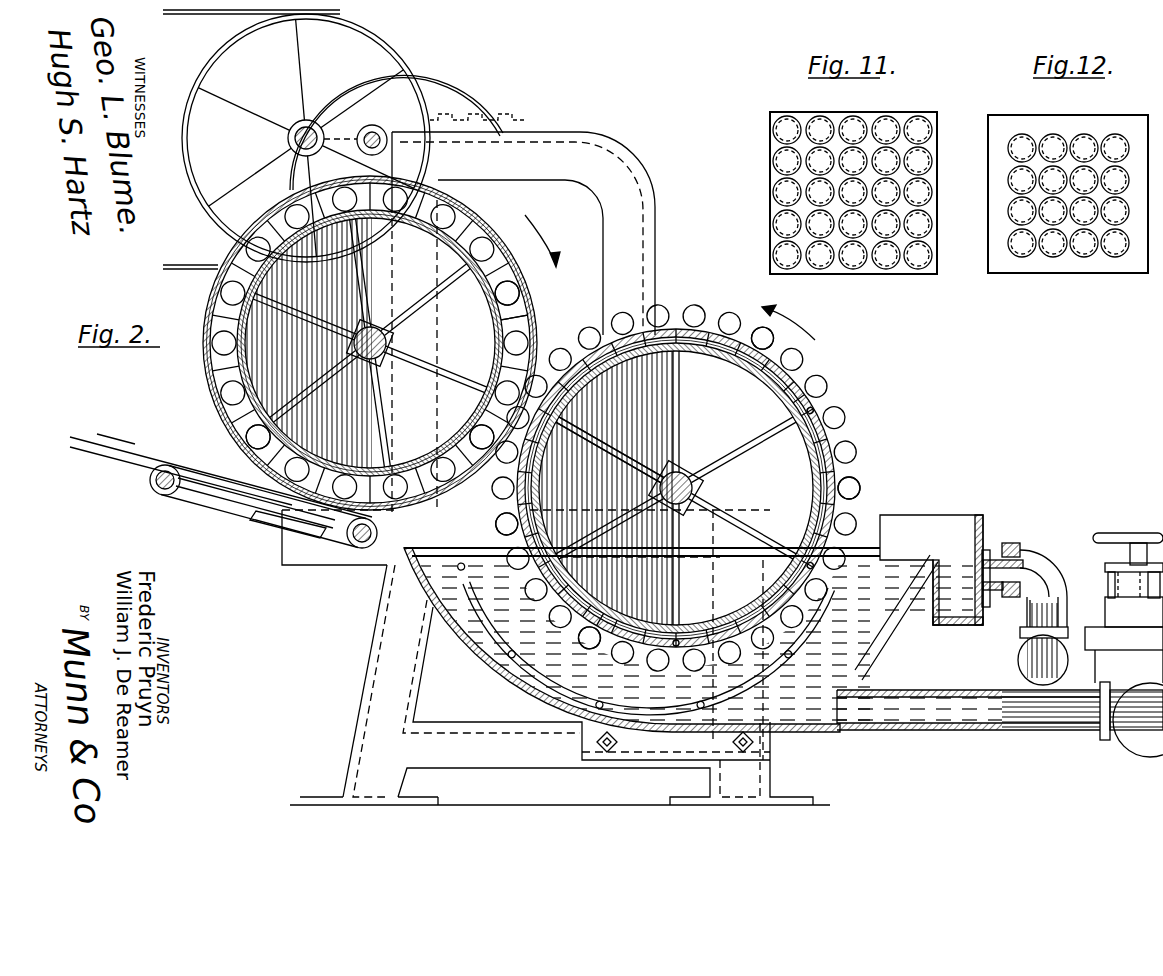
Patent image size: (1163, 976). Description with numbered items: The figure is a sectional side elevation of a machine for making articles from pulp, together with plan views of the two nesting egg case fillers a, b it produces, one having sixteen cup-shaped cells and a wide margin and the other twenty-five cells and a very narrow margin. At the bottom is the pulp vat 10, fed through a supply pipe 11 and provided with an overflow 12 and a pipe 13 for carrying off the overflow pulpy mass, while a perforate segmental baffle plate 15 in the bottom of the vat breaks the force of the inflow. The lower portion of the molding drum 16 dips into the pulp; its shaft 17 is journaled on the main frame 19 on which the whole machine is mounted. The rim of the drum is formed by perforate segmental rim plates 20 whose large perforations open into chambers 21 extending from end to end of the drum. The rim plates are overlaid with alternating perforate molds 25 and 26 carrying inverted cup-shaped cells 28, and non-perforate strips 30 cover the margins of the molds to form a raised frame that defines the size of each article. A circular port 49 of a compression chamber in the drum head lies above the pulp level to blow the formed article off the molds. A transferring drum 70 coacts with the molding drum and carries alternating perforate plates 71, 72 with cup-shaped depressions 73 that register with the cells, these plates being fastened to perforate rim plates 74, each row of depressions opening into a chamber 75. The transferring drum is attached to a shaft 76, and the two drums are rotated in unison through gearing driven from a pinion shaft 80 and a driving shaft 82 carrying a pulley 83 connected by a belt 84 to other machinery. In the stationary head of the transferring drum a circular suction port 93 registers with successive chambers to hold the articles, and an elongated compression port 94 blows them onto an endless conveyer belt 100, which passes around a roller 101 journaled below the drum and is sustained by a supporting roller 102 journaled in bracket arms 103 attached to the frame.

In FIG. 2, the pulp vat 10 is at (488, 670).
In FIG. 2, the supply pipe 11 is at (1026, 720).
In FIG. 2, the overflow 12 is at (919, 597).
In FIG. 2, the overflow pipe 13 is at (1020, 641).
In FIG. 2, the perforate segmental baffle plate 15 is at (526, 688).
In FIG. 2, the molding drum 16 is at (673, 480).
In FIG. 2, the shaft 17 is at (688, 467).
In FIG. 2, the main frame 19 is at (380, 664).
In FIG. 2, the segmental rim plates 20 is at (676, 488).
In FIG. 2, the drum chambers 21 is at (749, 375).
In FIG. 2, the mold 25 is at (688, 465).
In FIG. 2, the mold 26 is at (767, 340).
In FIG. 2, the cup-shaped cells 28 is at (725, 311).
In FIG. 2, the transverse strips 30 is at (815, 405).
In FIG. 2, the port of compression chamber 49 is at (607, 450).
In FIG. 2, the transferring drum 70 is at (370, 343).
In FIG. 2, the perforate plate 71 is at (532, 319).
In FIG. 2, the perforate plate 72 is at (383, 343).
In FIG. 2, the cup-shaped depressions 73 is at (526, 302).
In FIG. 2, the perforate rim plates 74 is at (501, 381).
In FIG. 2, the chamber 75 is at (496, 289).
In FIG. 2, the shaft 76 is at (390, 346).
In FIG. 2, the shaft 80 is at (382, 121).
In FIG. 2, the driving shaft 82 is at (288, 142).
In FIG. 2, the pulley 83 is at (223, 62).
In FIG. 2, the belt 84 is at (171, 15).
In FIG. 2, the port 93 is at (492, 405).
In FIG. 2, the port 94 is at (290, 447).
In FIG. 2, the endless conveyer belt 100 is at (226, 470).
In FIG. 2, the roller 101 is at (362, 549).
In FIG. 2, the supporting roller 102 is at (165, 496).
In FIG. 2, the bracket arms 103 is at (273, 540).
In FIG. 12, the egg case filler a is at (1063, 273).
In FIG. 11, the egg case filler b is at (870, 274).